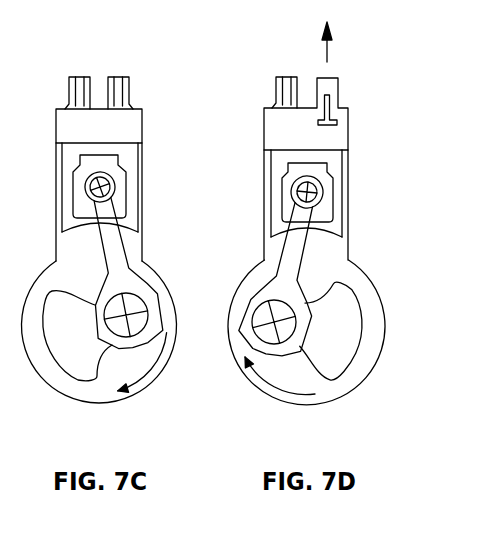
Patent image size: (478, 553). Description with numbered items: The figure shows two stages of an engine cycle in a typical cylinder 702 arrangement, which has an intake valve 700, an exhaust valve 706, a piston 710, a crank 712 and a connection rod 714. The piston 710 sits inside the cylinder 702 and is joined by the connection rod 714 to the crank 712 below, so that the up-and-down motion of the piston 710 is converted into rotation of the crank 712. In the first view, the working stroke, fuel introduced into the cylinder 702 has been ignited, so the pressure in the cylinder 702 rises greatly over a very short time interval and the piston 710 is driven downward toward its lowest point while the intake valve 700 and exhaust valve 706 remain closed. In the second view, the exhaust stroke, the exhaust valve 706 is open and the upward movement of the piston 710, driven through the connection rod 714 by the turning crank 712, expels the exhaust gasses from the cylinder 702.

In FIG. 7C, the intake valve 700 is at (73, 82).
In FIG. 7D, the intake valve 700 is at (280, 87).
In FIG. 7C, the cylinder 702 is at (133, 130).
In FIG. 7D, the cylinder 702 is at (345, 130).
In FIG. 7C, the exhaust valve 706 is at (120, 84).
In FIG. 7D, the exhaust valve 706 is at (330, 98).
In FIG. 7C, the piston 710 is at (128, 184).
In FIG. 7D, the piston 710 is at (333, 186).
In FIG. 7C, the crank 712 is at (73, 355).
In FIG. 7D, the crank 712 is at (318, 357).
In FIG. 7C, the connection rod 714 is at (118, 272).
In FIG. 7D, the connection rod 714 is at (285, 256).